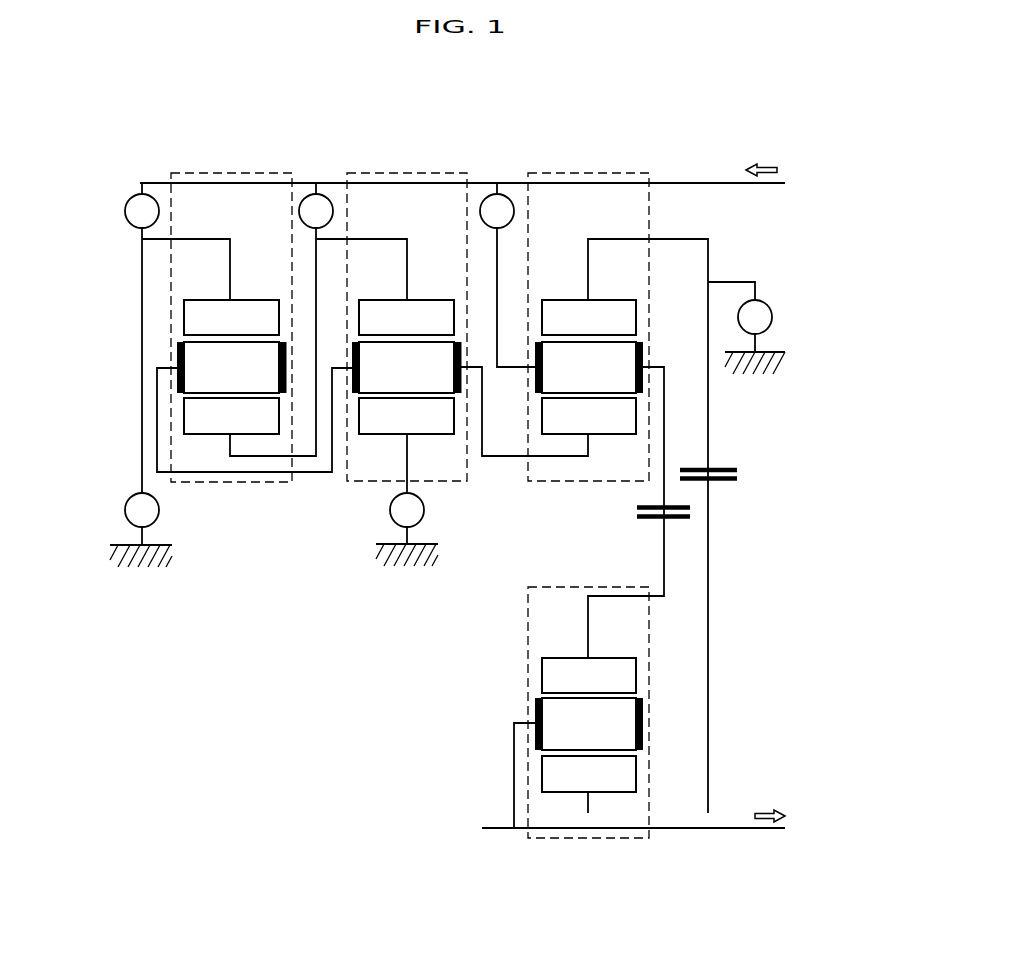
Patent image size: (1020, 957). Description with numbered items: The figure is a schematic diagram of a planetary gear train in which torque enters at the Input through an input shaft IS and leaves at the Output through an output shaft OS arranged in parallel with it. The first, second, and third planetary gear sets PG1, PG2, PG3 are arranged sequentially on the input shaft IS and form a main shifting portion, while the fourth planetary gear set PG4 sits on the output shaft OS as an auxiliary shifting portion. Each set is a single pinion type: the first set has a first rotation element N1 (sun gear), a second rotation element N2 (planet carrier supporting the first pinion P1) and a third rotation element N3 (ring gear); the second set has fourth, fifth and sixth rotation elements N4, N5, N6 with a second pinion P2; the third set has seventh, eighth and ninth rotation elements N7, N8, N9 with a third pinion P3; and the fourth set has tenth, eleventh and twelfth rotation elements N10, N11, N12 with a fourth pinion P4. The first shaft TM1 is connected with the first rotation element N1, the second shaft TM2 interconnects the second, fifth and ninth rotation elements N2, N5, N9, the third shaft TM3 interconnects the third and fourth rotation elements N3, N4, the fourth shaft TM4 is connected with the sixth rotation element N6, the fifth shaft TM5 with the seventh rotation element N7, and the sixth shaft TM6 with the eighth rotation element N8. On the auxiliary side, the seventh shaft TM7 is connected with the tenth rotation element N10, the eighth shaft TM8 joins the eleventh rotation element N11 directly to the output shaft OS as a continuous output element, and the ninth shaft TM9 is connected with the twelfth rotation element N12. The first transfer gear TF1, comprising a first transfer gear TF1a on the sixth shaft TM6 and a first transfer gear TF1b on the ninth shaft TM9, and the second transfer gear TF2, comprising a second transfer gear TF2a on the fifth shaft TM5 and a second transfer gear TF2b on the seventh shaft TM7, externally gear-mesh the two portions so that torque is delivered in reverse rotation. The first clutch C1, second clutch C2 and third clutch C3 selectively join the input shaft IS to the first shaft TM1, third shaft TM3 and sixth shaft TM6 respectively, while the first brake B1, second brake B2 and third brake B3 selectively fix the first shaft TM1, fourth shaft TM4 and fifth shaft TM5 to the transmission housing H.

The first planetary gear set PG1 is at (253, 170).
The second planetary gear set PG2 is at (418, 170).
The third planetary gear set PG3 is at (590, 170).
The fourth planetary gear set PG4 is at (654, 630).
The first rotation element N1 is at (231, 317).
The second rotation element N2 is at (178, 342).
The third rotation element N3 is at (231, 416).
The fourth rotation element N4 is at (406, 317).
The fifth rotation element N5 is at (353, 342).
The sixth rotation element N6 is at (406, 416).
The seventh rotation element N7 is at (589, 317).
The eighth rotation element N8 is at (534, 342).
The ninth rotation element N9 is at (589, 416).
The tenth rotation element N10 is at (589, 774).
The eleventh rotation element N11 is at (535, 697).
The twelfth rotation element N12 is at (589, 675).
The first pinion P1 is at (232, 367).
The second pinion P2 is at (407, 367).
The third pinion P3 is at (589, 367).
The fourth pinion P4 is at (589, 724).
The first clutch C1 is at (142, 205).
The second clutch C2 is at (497, 205).
The third clutch C3 is at (316, 205).
The first brake B1 is at (142, 519).
The second brake B2 is at (407, 489).
The third brake B3 is at (740, 317).
The first shaft TM1 is at (138, 310).
The second shaft TM2 is at (320, 478).
The third shaft TM3 is at (243, 466).
The fourth shaft TM4 is at (416, 458).
The fifth shaft TM5 is at (669, 234).
The sixth shaft TM6 is at (668, 401).
The seventh shaft TM7 is at (713, 715).
The eighth shaft TM8 is at (510, 777).
The ninth shaft TM9 is at (668, 573).
The first transfer gear TF1 is at (615, 526).
The first transfer gear TF1a is at (637, 508).
The first transfer gear TF1b is at (637, 520).
The second transfer gear TF2 is at (754, 477).
The second transfer gear TF2a is at (737, 470).
The second transfer gear TF2b is at (735, 488).
The input shaft IS is at (752, 184).
The output shaft OS is at (750, 829).
The transmission housing H is at (170, 560).
The input Input is at (760, 156).
The output Output is at (762, 802).